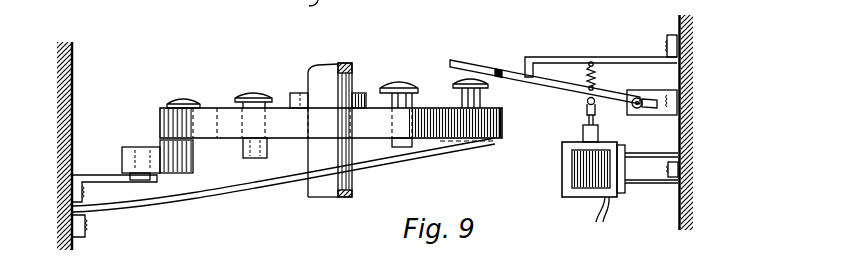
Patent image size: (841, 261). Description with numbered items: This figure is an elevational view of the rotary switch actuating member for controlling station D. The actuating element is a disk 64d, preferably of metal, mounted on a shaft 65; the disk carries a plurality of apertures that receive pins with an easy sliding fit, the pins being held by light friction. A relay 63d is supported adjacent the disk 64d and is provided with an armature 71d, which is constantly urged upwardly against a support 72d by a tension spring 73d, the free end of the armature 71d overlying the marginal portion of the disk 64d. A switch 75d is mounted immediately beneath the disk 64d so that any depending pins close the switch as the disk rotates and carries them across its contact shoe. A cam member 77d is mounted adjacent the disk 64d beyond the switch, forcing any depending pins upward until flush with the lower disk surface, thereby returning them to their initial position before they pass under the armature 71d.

The relay 63d is at (572, 173).
The disk 64d is at (210, 120).
The shaft 65 is at (352, 73).
The armature 71d is at (546, 86).
The support 72d is at (524, 68).
The tension spring 73d is at (603, 70).
The switch 75d is at (136, 150).
The cam member 77d is at (383, 160).